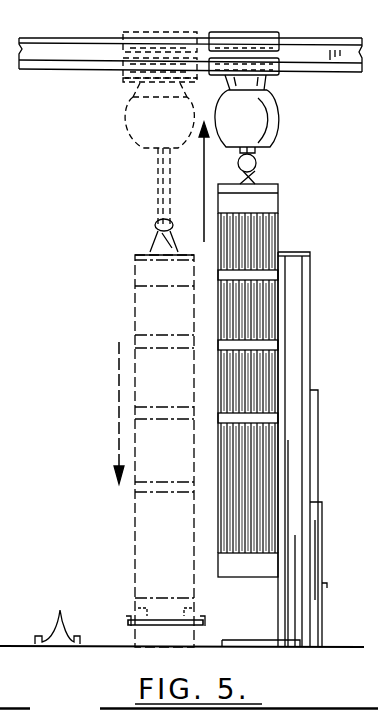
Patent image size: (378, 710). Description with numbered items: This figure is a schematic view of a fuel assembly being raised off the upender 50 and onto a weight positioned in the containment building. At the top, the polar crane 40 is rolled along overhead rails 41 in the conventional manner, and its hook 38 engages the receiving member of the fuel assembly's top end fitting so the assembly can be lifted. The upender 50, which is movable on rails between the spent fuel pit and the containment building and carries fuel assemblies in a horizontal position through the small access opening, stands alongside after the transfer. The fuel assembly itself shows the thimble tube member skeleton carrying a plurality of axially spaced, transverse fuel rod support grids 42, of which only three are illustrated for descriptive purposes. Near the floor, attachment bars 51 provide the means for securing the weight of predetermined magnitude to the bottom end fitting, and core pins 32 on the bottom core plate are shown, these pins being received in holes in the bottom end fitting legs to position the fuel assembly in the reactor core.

The overhead rails 41 is at (88, 57).
The polar crane 40 is at (279, 40).
The hook 38 is at (256, 164).
The upender 50 is at (310, 290).
The fuel rod support grids 42 is at (272, 275).
The core pins 32 is at (60, 610).
The attachment bars 51 is at (131, 620).